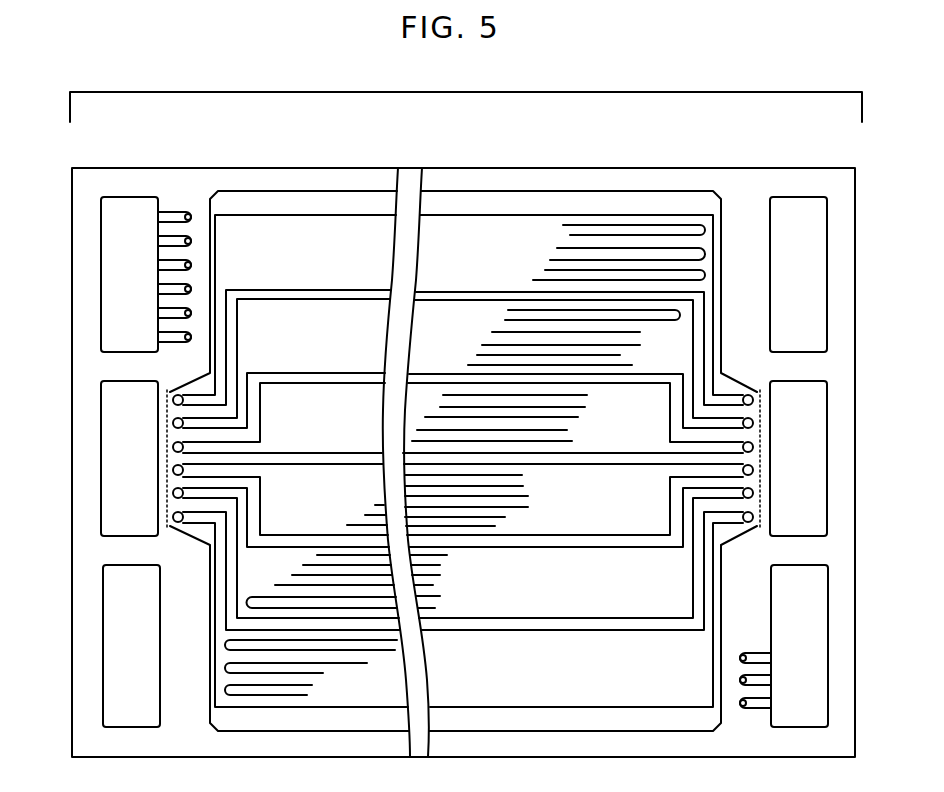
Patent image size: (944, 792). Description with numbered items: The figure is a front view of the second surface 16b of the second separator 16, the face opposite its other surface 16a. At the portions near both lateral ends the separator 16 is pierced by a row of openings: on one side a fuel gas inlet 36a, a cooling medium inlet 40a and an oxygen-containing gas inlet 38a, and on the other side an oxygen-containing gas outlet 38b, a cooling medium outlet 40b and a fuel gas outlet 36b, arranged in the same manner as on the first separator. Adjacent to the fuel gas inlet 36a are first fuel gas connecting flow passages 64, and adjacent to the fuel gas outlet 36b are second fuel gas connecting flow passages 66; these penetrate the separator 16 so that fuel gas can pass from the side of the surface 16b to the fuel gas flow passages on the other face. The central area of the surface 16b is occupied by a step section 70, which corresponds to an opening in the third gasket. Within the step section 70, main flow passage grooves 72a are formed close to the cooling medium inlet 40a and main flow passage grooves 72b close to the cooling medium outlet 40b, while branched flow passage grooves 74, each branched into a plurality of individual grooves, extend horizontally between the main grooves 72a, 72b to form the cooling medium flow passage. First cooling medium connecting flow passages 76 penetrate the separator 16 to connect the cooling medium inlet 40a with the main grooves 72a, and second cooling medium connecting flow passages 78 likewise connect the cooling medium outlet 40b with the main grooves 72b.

The second separator 16 is at (558, 154).
The surface of the second separator 16a is at (337, 183).
The surface of the second separator 16b is at (496, 179).
The step section 70 is at (671, 201).
The branched flow passage grooves 74 is at (516, 372).
The main flow passage grooves 72a is at (240, 448).
The main flow passage grooves 72b is at (684, 448).
The fuel gas inlet 36a is at (138, 317).
The fuel gas outlet 36b is at (811, 635).
The oxygen-containing gas inlet 38a is at (138, 653).
The oxygen-containing gas outlet 38b is at (806, 285).
The cooling medium inlet 40a is at (138, 467).
The cooling medium outlet 40b is at (806, 452).
The first fuel gas connecting flow passages 64 is at (163, 268).
The second fuel gas connecting flow passages 66 is at (817, 700).
The first cooling medium connecting flow passages 76 is at (182, 490).
The second cooling medium connecting flow passages 78 is at (751, 516).